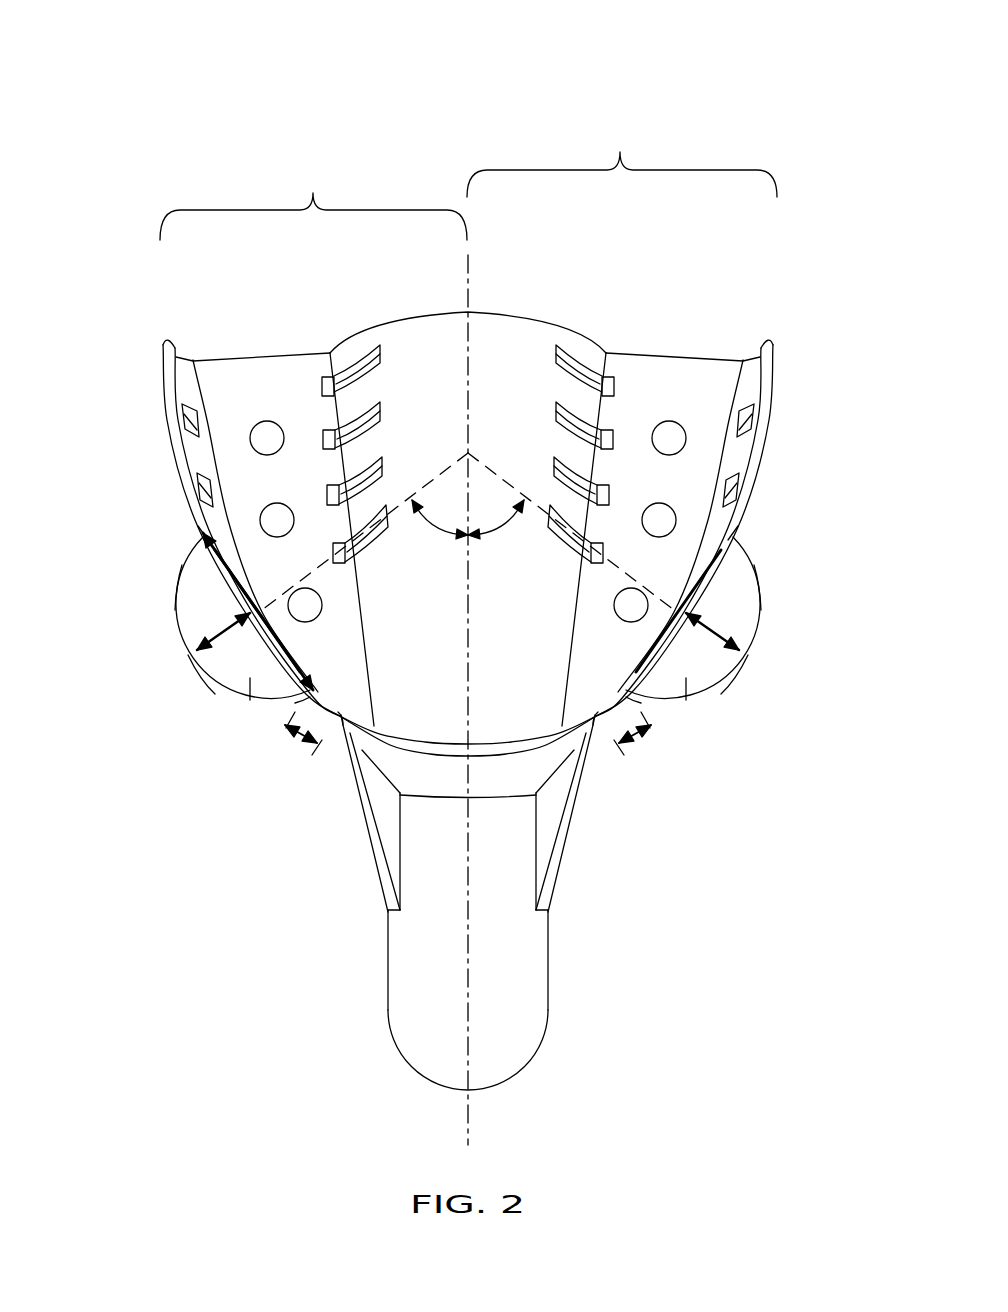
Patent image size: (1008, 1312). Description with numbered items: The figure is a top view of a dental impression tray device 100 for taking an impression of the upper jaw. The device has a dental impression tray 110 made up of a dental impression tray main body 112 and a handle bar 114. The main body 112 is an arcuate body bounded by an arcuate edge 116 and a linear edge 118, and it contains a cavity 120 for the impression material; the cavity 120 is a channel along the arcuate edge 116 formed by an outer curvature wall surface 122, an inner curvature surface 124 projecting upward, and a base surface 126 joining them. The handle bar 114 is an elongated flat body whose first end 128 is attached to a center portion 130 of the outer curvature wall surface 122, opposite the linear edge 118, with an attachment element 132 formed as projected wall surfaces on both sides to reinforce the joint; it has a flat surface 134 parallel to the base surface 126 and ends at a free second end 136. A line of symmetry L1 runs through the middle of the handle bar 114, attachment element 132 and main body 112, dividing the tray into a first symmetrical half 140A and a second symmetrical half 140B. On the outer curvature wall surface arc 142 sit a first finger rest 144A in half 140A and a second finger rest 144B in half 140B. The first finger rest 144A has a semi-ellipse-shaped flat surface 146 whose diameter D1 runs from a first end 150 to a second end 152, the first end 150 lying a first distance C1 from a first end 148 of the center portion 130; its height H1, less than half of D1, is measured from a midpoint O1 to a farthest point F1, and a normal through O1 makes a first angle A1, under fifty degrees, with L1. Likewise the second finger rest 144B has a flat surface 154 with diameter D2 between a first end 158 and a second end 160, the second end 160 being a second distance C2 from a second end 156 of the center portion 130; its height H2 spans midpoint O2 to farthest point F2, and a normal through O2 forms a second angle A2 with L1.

The dental impression tray device 100 is at (790, 77).
The dental impression tray 110 is at (755, 794).
The dental impression tray main body 112 is at (157, 443).
The handle bar 114 is at (496, 1014).
The arcuate edge 116 is at (770, 428).
The linear edge 118 is at (702, 352).
The cavity 120 is at (253, 383).
The outer curvature wall surface 122 is at (170, 340).
The inner curvature surface 124 is at (340, 340).
The base surface 126 is at (312, 350).
The first end 128 is at (430, 797).
The center portion 130 is at (522, 777).
The attachment element 132 is at (390, 900).
The flat surface 134 is at (398, 1007).
The second end 136 is at (490, 1087).
The first symmetrical half 140A is at (313, 193).
The second symmetrical half 140B is at (620, 152).
The outer curvature wall surface arc 142 is at (217, 550).
The first finger rest 144A is at (213, 677).
The second finger rest 144B is at (725, 680).
The flat surface 146 is at (250, 678).
The first end 148 is at (343, 733).
The first end 150 is at (303, 701).
The second end 152 is at (200, 533).
The flat surface 154 is at (687, 680).
The second end 156 is at (597, 723).
The first end 158 is at (733, 532).
The second end 160 is at (630, 697).
The first angle A1 is at (430, 530).
The second angle A2 is at (507, 530).
The first distance C1 is at (300, 737).
The second distance C2 is at (635, 735).
The diameter D1 is at (215, 560).
The diameter D2 is at (725, 562).
The farthest point F1 is at (207, 653).
The farthest point F2 is at (745, 660).
The height H1 is at (217, 620).
The height H2 is at (745, 625).
The line of symmetry L1 is at (467, 278).
The midpoint O1 is at (200, 590).
The midpoint O2 is at (710, 590).